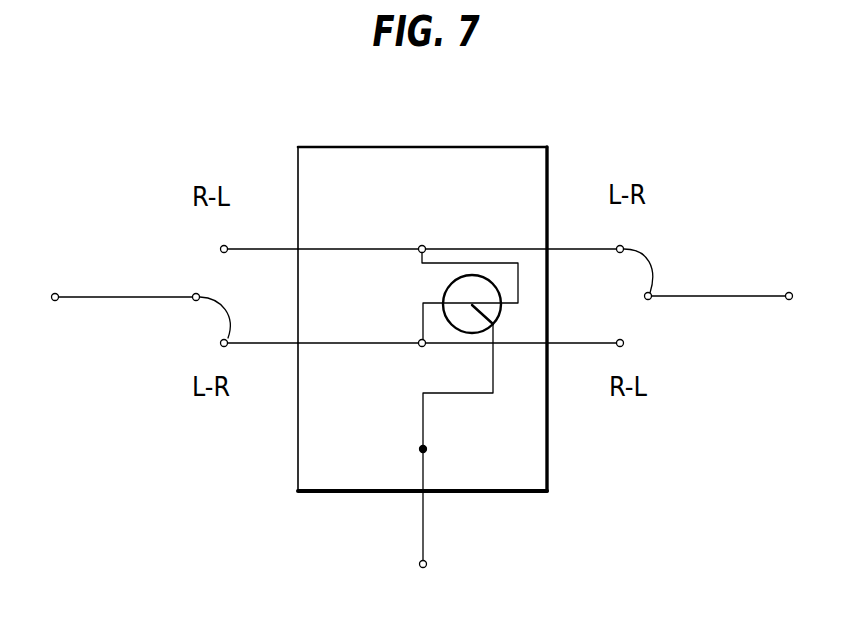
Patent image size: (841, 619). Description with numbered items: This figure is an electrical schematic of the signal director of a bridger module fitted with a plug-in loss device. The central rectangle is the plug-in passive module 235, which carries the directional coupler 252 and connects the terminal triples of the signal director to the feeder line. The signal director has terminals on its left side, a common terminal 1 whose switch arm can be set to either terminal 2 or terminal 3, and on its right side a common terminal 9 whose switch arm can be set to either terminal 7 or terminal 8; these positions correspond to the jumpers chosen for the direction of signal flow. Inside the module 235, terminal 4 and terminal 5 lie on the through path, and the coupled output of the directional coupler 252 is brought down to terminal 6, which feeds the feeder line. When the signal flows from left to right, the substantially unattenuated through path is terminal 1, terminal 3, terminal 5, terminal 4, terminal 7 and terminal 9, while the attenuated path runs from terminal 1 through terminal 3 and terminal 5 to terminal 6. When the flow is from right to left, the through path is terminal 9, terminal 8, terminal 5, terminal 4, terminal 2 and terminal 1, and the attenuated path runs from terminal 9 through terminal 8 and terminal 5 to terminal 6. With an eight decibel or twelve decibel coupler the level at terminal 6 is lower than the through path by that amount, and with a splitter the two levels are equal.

The signal director terminal 1 is at (141, 301).
The signal director terminal 2 is at (260, 235).
The signal director terminal 3 is at (260, 329).
The signal director terminal 4 is at (422, 276).
The signal director terminal 5 is at (422, 327).
The signal director terminal 6 is at (435, 500).
The signal director terminal 7 is at (600, 254).
The signal director terminal 8 is at (585, 328).
The signal director terminal 9 is at (719, 282).
The plug-in passive module 235 is at (440, 147).
The directional coupler 252 is at (500, 317).